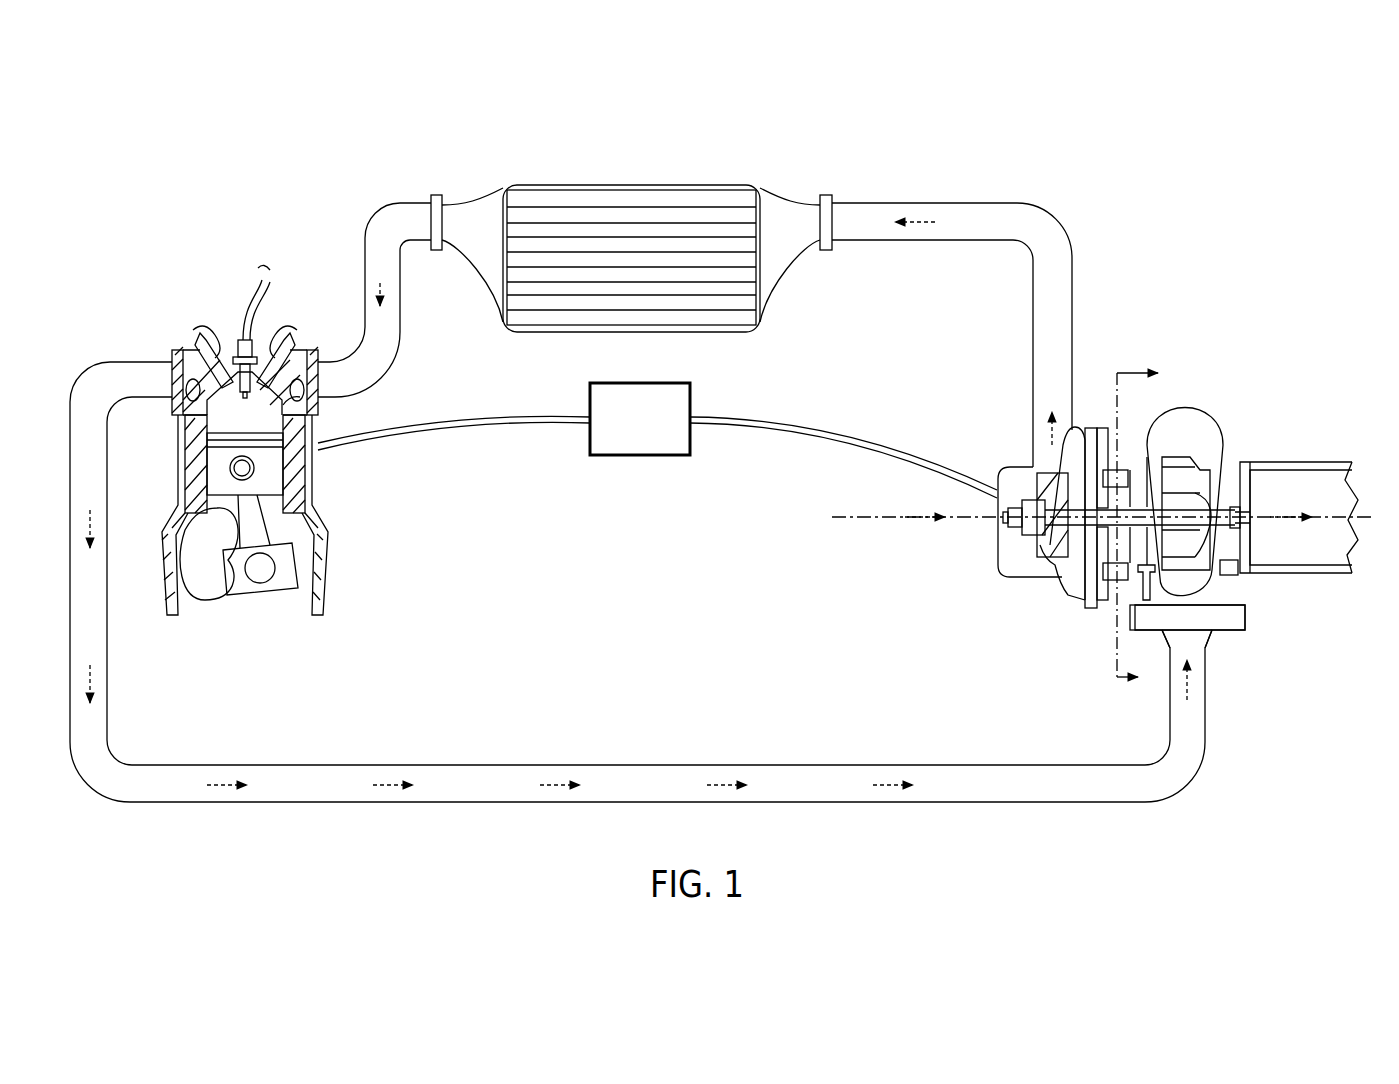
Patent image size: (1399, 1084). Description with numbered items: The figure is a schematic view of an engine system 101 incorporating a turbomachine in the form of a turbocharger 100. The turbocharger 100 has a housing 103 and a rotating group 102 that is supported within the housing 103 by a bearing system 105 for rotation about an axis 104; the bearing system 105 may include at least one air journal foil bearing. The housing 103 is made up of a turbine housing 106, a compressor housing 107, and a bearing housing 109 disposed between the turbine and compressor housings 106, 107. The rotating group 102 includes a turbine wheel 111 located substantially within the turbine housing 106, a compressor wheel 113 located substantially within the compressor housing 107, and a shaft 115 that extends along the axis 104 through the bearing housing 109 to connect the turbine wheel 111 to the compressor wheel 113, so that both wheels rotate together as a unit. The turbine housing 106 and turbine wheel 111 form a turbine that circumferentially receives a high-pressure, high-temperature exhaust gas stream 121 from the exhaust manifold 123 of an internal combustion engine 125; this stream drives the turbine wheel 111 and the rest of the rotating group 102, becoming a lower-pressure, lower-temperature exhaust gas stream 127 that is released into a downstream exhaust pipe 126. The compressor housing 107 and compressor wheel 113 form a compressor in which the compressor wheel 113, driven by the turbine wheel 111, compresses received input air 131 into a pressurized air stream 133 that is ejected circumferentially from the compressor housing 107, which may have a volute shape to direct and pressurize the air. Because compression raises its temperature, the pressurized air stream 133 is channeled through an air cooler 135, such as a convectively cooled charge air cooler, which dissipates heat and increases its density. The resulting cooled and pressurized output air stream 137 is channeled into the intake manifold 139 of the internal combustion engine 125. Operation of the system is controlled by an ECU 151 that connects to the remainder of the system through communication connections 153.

The turbocharger 100 is at (1190, 338).
The engine system 101 is at (213, 181).
The rotating group 102 is at (1097, 524).
The housing 103 is at (1100, 420).
The axis 104 is at (1362, 518).
The bearing system 105 is at (1123, 525).
The turbine housing 106 is at (1213, 440).
The compressor housing 107 is at (1025, 580).
The bearing housing 109 is at (1127, 477).
The turbine wheel 111 is at (1200, 503).
The compressor wheel 113 is at (1040, 548).
The shaft 115 is at (1140, 513).
The exhaust gas stream 121 is at (722, 783).
The exhaust manifold 123 is at (203, 365).
The internal combustion engine 125 is at (270, 480).
The exhaust pipe 126 is at (1307, 453).
The exhaust gas stream 127 is at (1290, 520).
The input air 131 is at (910, 520).
The pressurized air stream 133 is at (1050, 443).
The air cooler 135 is at (628, 208).
The output air stream 137 is at (376, 288).
The intake manifold 139 is at (303, 398).
The ECU 151 is at (636, 457).
The communication connections 153 is at (782, 432).